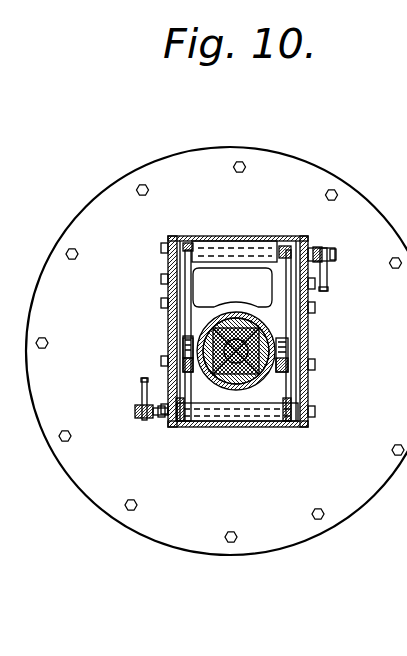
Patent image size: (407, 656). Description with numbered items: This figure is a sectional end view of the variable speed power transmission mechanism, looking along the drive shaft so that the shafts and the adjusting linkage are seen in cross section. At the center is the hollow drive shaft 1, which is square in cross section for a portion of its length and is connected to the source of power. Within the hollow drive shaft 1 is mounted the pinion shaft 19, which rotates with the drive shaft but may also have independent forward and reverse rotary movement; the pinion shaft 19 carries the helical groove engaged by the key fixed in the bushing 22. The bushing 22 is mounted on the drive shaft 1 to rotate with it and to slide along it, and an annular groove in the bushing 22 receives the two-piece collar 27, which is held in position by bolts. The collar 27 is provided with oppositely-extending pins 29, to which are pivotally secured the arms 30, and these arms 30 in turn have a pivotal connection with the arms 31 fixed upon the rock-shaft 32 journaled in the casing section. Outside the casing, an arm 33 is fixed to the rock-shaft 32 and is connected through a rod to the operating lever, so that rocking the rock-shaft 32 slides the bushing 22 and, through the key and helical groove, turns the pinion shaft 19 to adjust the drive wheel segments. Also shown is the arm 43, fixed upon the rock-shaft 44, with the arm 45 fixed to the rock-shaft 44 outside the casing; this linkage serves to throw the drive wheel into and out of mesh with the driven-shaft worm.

The hollow drive shaft 1 is at (268, 339).
The pinion shaft 19 is at (236, 372).
The bushing 22 is at (188, 343).
The two-piece collar 27 is at (258, 376).
The pins 29 is at (180, 347).
The arms 30 is at (180, 364).
The arms 31 is at (183, 291).
The rock-shaft 32 is at (330, 254).
The arm 33 is at (328, 278).
The arm 43 is at (180, 421).
The rock-shaft 44 is at (151, 418).
The arm 45 is at (141, 388).